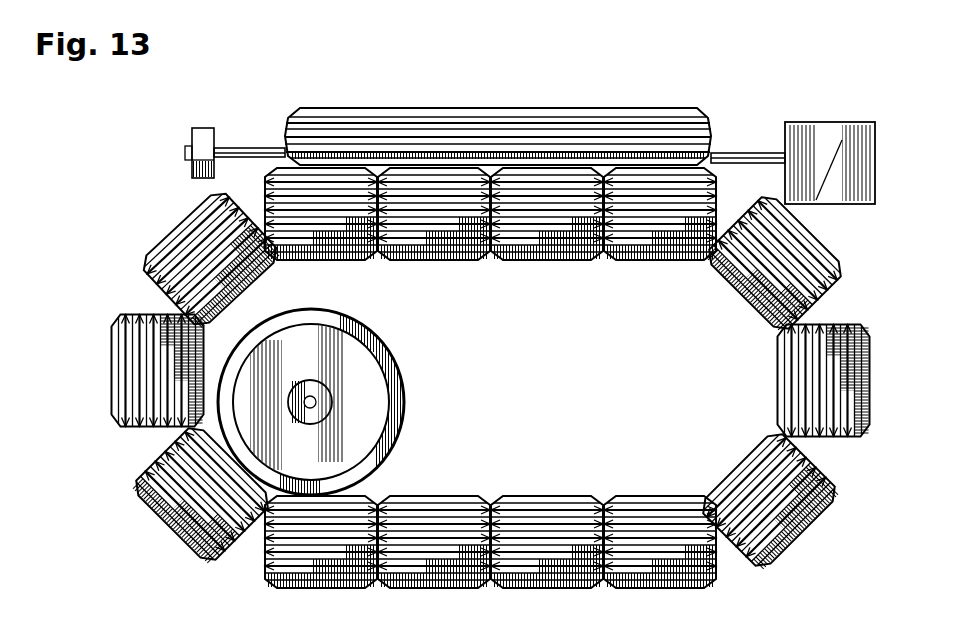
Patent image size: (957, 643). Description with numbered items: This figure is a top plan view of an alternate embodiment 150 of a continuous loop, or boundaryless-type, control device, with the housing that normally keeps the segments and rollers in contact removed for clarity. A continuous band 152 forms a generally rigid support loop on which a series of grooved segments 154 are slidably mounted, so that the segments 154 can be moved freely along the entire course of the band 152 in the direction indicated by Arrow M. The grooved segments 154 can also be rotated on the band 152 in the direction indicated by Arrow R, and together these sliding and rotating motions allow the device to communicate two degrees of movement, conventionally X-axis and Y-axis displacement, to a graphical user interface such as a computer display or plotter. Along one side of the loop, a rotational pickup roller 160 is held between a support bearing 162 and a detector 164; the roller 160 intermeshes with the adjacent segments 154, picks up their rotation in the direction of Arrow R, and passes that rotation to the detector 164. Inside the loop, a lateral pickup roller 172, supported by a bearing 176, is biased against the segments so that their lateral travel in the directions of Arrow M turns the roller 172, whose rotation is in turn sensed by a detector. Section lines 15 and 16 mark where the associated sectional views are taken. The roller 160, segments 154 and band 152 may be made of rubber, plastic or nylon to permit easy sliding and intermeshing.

The alternate embodiment of continuous loop control device 150 is at (82, 236).
The continuous band 152 is at (262, 543).
The grooved segments 154 is at (112, 383).
The rotational pickup roller 160 is at (345, 108).
The support bearing 162 is at (192, 130).
The detector 164 is at (822, 135).
The lateral pickup roller 172 is at (400, 405).
The bearing 176 is at (298, 392).
The section line 15 is at (405, 305).
The section line 16 is at (645, 68).
The Arrow M is at (608, 622).
The Arrow R is at (726, 584).